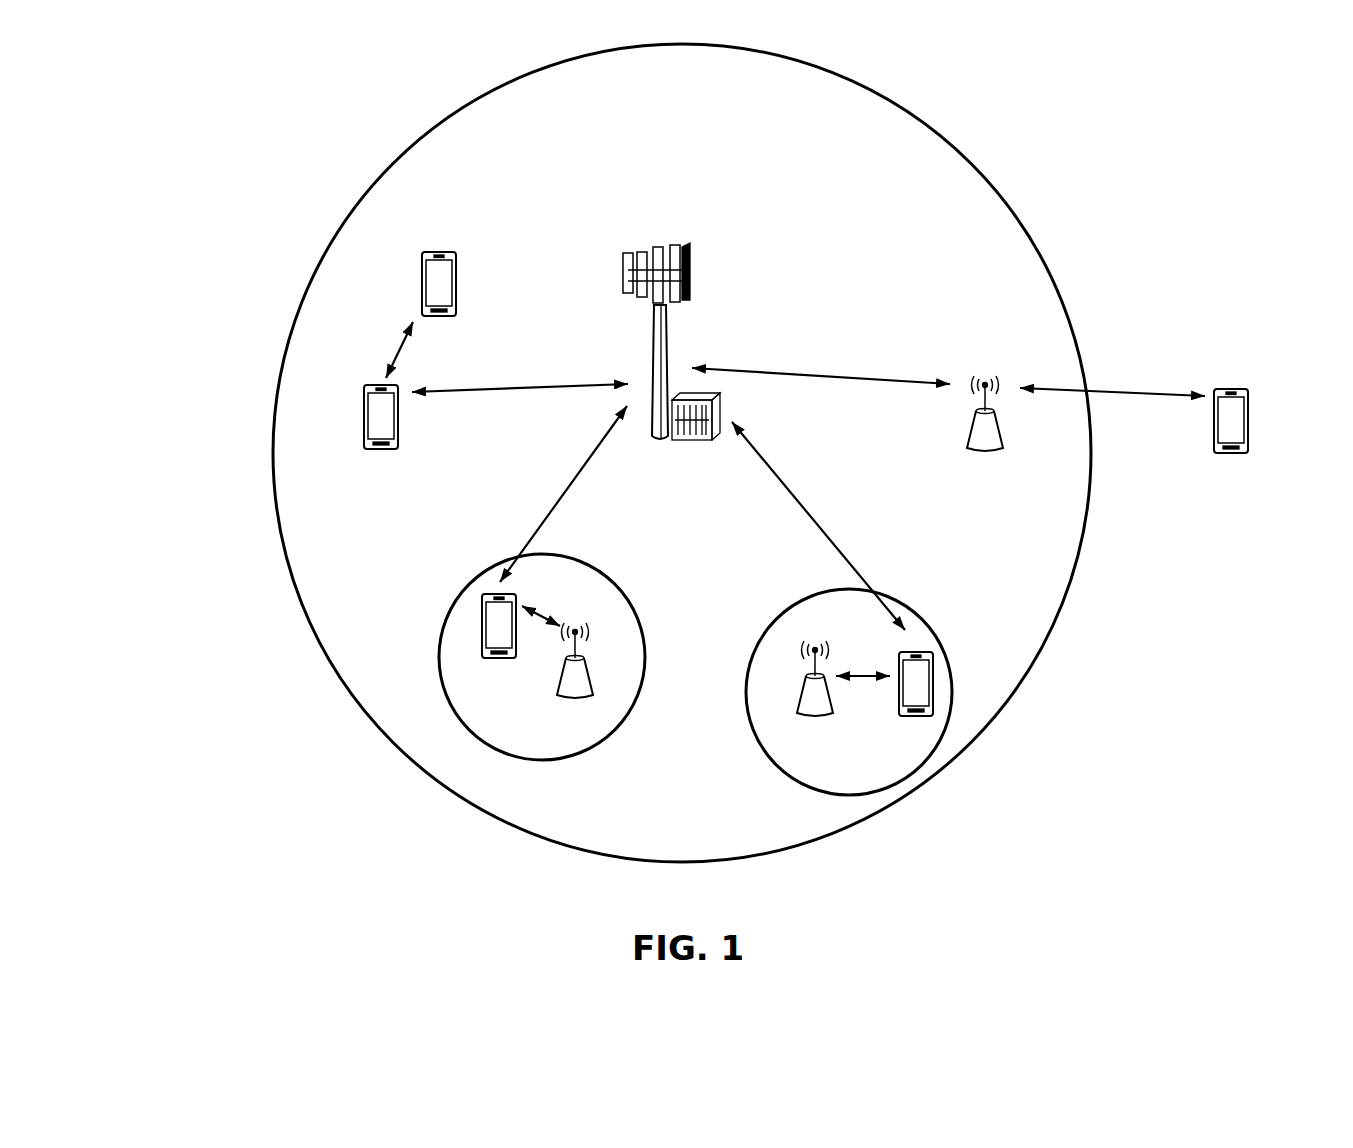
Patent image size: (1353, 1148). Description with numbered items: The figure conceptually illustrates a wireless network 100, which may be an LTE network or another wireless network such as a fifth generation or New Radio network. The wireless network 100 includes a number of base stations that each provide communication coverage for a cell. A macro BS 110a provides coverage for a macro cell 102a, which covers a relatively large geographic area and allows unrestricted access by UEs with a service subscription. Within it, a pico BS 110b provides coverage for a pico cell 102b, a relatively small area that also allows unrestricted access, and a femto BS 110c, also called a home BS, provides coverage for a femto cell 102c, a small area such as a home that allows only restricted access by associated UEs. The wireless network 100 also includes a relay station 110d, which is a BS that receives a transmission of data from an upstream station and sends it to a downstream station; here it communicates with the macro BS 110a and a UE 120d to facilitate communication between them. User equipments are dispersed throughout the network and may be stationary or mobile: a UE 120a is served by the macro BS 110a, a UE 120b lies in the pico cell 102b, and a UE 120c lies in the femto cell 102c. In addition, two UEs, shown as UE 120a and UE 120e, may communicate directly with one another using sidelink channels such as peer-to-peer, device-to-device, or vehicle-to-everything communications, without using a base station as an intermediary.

The wireless network 100 is at (232, 100).
The macro cell 102a is at (950, 144).
The pico cell 102b is at (628, 600).
The femto cell 102c is at (790, 607).
The macro BS 110a is at (664, 238).
The pico BS 110b is at (594, 693).
The femto BS 110c is at (797, 705).
The relay station 110d is at (985, 372).
The UE 120a is at (363, 410).
The UE 120b is at (494, 662).
The UE 120c is at (905, 718).
The UE 120d is at (1242, 388).
The UE 120e is at (424, 270).